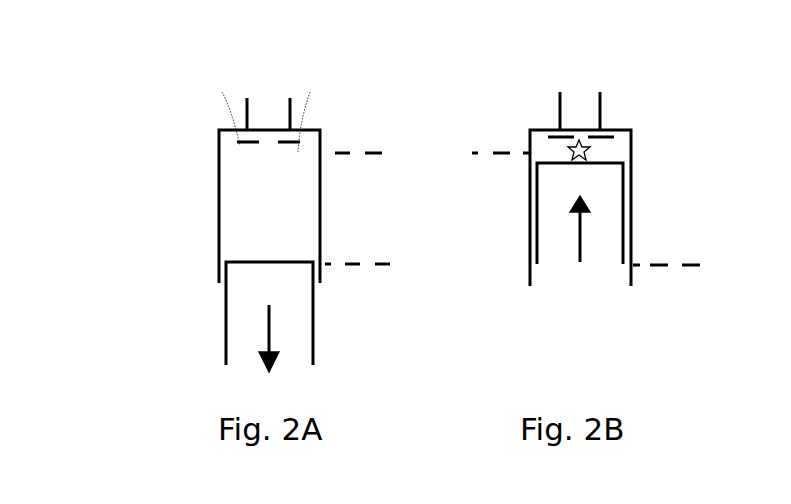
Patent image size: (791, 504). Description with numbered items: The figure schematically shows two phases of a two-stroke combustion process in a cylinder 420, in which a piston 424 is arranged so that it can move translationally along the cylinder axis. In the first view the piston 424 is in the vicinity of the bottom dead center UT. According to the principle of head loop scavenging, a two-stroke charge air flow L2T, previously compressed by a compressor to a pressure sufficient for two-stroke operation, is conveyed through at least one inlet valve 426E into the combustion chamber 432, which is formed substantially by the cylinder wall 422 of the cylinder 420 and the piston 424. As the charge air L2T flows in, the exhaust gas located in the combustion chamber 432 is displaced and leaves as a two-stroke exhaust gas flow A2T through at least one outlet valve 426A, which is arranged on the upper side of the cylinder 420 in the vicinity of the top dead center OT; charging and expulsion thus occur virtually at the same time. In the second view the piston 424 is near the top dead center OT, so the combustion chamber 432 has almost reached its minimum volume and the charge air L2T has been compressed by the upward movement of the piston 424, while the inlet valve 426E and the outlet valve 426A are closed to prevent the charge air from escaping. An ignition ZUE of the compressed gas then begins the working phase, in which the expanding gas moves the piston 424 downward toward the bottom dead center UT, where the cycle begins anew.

In FIG. 2A, the cylinder 420 is at (130, 152).
In FIG. 2B, the cylinder 420 is at (490, 133).
In FIG. 2A, the cylinder wall 422 is at (220, 188).
In FIG. 2B, the cylinder wall 422 is at (530, 190).
In FIG. 2A, the piston 424 is at (248, 329).
In FIG. 2B, the piston 424 is at (556, 230).
In FIG. 2A, the inlet valve 426E is at (251, 100).
In FIG. 2B, the inlet valve 426E is at (563, 98).
In FIG. 2A, the outlet valve 426A is at (293, 100).
In FIG. 2B, the outlet valve 426A is at (603, 98).
In FIG. 2A, the combustion chamber 432 is at (247, 172).
In FIG. 2B, the combustion chamber 432 is at (616, 153).
In FIG. 2A, the two-stroke charge air flow L2T is at (240, 118).
In FIG. 2A, the two-stroke exhaust gas flow A2T is at (294, 117).
In FIG. 2A, the top dead center OT is at (351, 155).
In FIG. 2B, the top dead center OT is at (475, 154).
In FIG. 2A, the bottom dead center UT is at (389, 262).
In FIG. 2B, the bottom dead center UT is at (700, 263).
In FIG. 2B, the ignition ZUE is at (588, 148).